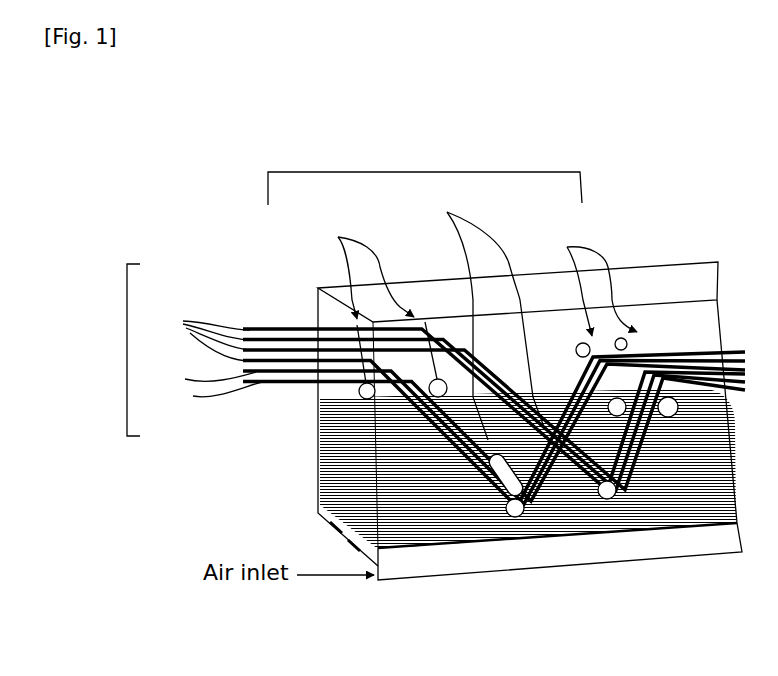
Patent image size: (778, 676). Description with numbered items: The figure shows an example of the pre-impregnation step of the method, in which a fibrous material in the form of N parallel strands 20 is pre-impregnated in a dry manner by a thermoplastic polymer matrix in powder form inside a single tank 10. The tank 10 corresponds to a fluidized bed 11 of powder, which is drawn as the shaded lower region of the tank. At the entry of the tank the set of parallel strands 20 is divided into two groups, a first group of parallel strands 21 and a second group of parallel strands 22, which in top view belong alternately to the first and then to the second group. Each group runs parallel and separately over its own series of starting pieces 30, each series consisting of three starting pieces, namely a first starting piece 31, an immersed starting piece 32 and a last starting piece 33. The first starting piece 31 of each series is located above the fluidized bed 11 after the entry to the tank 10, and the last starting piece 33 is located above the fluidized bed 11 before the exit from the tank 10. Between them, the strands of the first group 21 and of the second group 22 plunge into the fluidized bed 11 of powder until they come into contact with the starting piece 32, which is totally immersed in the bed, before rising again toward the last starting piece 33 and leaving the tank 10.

The tank 10 is at (606, 590).
The fluidized bed 11 is at (358, 469).
The parallel strands 20 is at (126, 351).
The first group of parallel strands 21 is at (204, 339).
The second group of parallel strands 22 is at (207, 390).
The starting pieces 30 is at (422, 172).
The first starting piece 31 is at (365, 300).
The immersed starting piece 32 is at (477, 316).
The last starting piece 33 is at (586, 282).